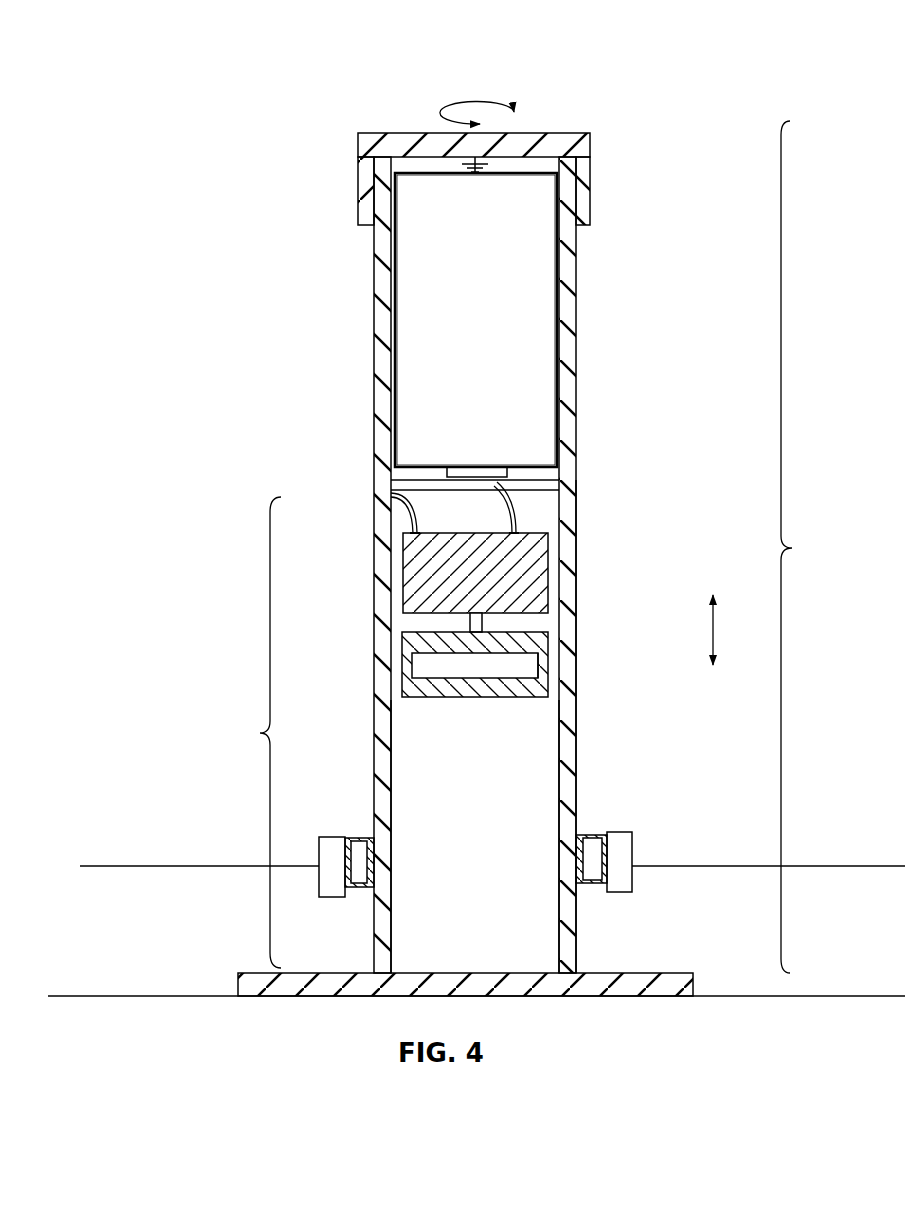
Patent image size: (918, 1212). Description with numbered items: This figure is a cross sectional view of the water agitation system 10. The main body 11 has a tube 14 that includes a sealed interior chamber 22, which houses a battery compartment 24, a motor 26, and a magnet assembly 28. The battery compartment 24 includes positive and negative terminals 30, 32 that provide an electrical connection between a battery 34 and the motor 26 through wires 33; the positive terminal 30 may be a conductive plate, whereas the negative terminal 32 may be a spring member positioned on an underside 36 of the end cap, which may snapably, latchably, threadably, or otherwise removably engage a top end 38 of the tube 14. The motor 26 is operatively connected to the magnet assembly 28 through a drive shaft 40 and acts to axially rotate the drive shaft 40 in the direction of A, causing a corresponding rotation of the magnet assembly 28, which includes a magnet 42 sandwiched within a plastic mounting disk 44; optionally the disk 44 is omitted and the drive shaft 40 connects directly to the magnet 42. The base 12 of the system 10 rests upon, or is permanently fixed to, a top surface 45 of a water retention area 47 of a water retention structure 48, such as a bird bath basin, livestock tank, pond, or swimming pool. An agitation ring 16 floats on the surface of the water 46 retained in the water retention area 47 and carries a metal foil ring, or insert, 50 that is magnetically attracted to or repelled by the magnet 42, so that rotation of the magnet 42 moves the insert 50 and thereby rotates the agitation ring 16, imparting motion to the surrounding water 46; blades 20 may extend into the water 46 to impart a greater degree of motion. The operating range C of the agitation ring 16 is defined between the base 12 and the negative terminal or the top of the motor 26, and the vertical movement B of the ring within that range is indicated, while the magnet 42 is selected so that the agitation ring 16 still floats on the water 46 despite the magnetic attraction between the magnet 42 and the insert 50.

The water agitation system 10 is at (809, 547).
The main body 11 is at (580, 278).
The base 12 is at (279, 985).
The tube 14 is at (578, 567).
The agitation ring 16 is at (589, 835).
The blades 20 is at (630, 832).
The sealed interior chamber 22 is at (414, 739).
The battery compartment 24 is at (449, 177).
The motor 26 is at (420, 569).
The magnet assembly 28 is at (544, 667).
The positive terminal 30 is at (550, 485).
The negative terminal 32 is at (489, 165).
The wires 33 is at (408, 508).
The battery 34 is at (535, 345).
The underside of the end cap 36 is at (482, 161).
The top end of the tube 38 is at (391, 166).
The drive shaft 40 is at (483, 624).
The magnet 42 is at (425, 671).
The plastic mounting disk 44 is at (478, 664).
The top surface 45 is at (703, 974).
The water 46 is at (137, 861).
The water retention area 47 is at (651, 922).
The water retention structure 48 is at (96, 1019).
The metal foil ring insert 50 is at (358, 843).
The direction of rotation A is at (478, 101).
The vertical movement direction B is at (716, 631).
The operating range C is at (256, 732).